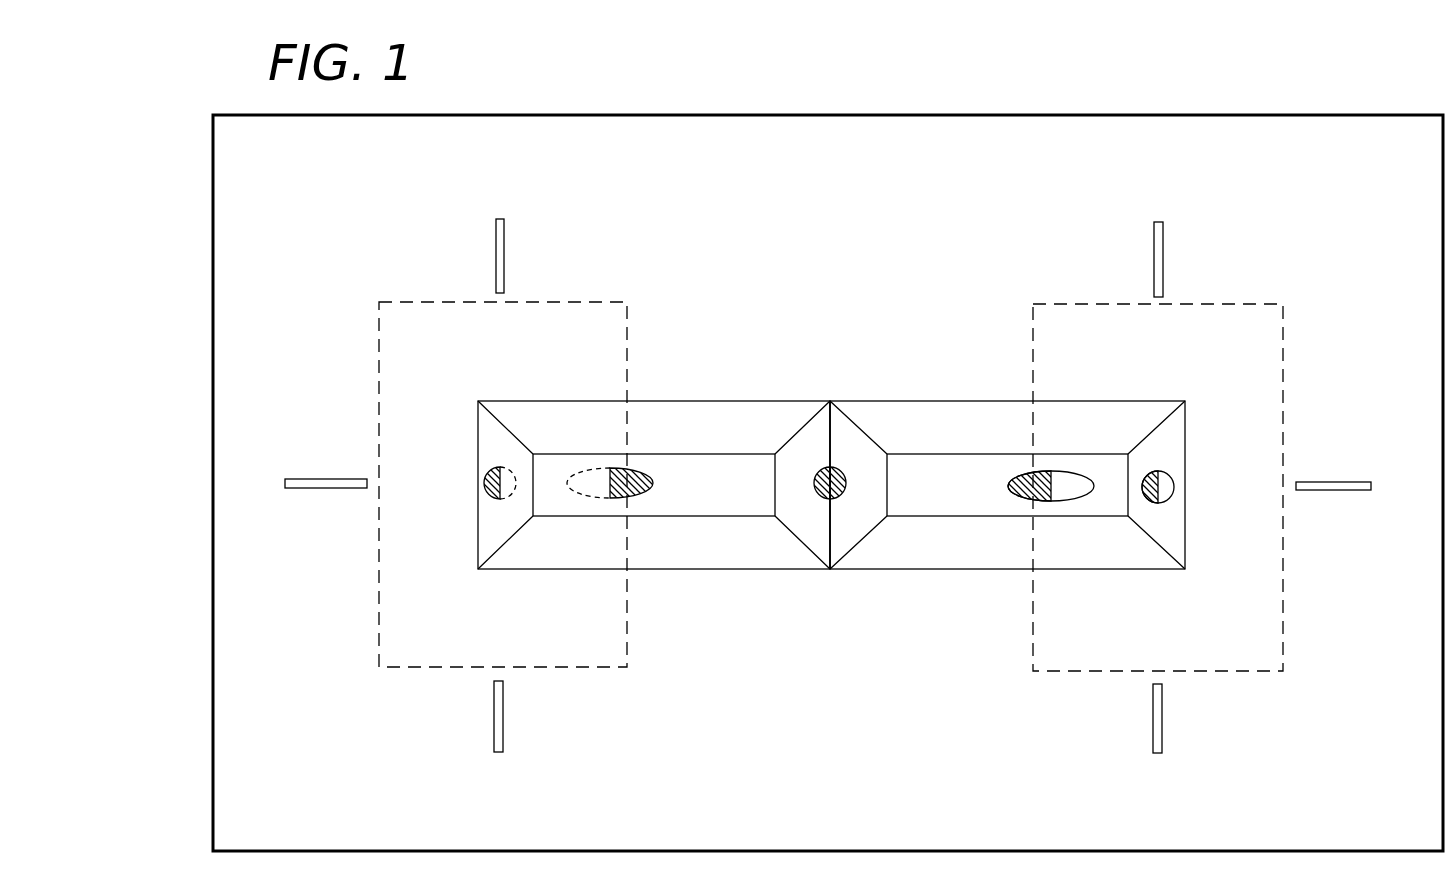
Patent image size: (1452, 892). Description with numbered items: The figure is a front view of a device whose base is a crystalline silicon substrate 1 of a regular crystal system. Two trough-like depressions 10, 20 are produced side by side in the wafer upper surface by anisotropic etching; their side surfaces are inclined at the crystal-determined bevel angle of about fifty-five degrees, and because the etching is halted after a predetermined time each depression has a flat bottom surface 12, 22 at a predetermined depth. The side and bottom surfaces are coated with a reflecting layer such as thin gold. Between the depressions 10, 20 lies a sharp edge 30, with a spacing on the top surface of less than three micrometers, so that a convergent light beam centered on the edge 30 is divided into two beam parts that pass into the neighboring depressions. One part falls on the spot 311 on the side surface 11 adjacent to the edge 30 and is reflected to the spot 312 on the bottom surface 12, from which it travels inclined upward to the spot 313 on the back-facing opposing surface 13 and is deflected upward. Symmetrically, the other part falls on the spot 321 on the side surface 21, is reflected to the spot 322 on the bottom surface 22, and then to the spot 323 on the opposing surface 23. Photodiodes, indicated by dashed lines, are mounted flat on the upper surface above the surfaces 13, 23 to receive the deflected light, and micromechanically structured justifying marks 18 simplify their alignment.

The silicon substrate 1 is at (1381, 200).
The depression 10 is at (688, 570).
The side surface 11 is at (818, 528).
The bottom surface 12 is at (745, 500).
The back-facing opposing surface 13 is at (488, 530).
The justifying mark 18 is at (495, 252).
The depression 20 is at (967, 570).
The side surface 21 is at (871, 528).
The bottom surface 22 is at (956, 500).
The back-facing opposing surface 23 is at (1173, 538).
The edge 30 is at (830, 570).
The spot 311 is at (822, 477).
The spot 312 is at (660, 480).
The spot 313 is at (497, 473).
The spot 321 is at (845, 473).
The spot 322 is at (1023, 477).
The spot 323 is at (1170, 477).